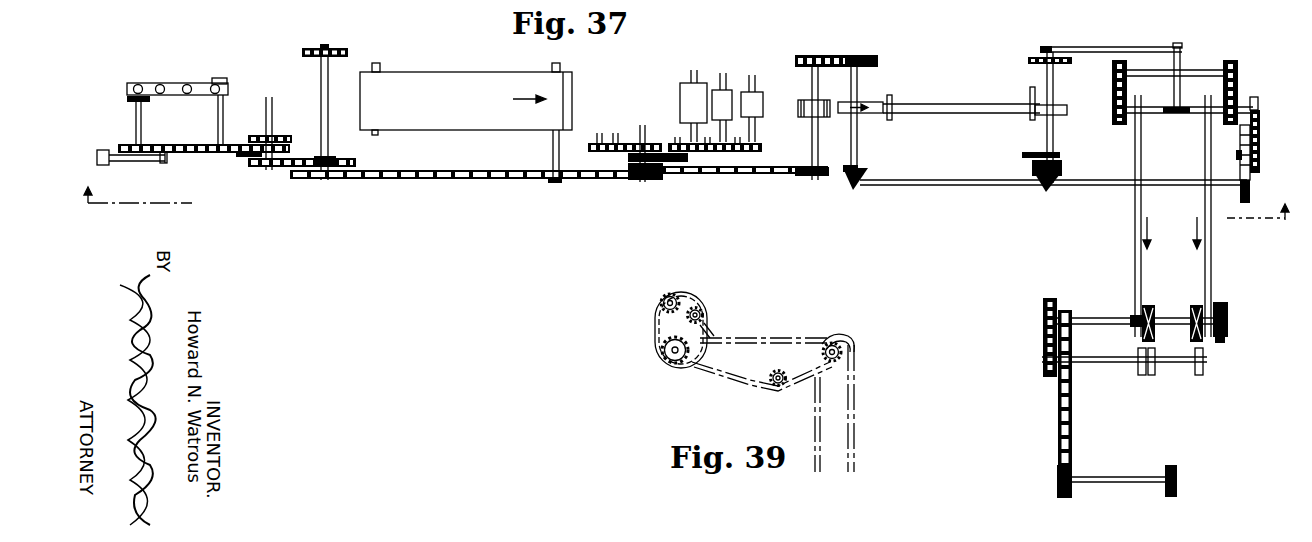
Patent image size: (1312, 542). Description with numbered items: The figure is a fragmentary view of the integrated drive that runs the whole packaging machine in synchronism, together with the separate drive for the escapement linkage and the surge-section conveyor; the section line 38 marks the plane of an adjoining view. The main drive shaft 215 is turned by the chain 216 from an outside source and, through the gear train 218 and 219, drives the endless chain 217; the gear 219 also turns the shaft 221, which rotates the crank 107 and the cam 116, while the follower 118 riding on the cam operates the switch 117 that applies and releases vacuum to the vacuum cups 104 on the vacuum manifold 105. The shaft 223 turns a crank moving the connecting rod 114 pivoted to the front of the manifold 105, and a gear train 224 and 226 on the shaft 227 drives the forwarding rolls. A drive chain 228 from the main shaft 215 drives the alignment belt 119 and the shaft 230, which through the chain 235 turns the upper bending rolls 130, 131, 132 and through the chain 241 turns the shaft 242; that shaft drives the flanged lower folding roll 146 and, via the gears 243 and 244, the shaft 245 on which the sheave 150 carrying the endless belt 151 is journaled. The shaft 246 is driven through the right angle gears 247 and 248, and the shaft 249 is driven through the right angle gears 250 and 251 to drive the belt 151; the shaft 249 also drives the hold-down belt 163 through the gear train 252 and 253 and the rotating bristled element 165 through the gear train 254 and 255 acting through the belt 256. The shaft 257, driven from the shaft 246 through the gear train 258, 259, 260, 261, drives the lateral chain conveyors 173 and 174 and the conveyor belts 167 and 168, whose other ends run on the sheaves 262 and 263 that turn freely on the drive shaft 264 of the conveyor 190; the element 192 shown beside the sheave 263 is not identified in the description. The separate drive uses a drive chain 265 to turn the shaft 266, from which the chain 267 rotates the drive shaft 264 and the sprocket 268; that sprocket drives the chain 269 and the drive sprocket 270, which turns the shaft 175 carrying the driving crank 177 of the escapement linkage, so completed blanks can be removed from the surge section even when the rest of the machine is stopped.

In FIG. 37, the section line 38 is at (690, 192).
In FIG. 37, the vacuum cups 104 is at (136, 85).
In FIG. 37, the vacuum manifold 105 is at (172, 83).
In FIG. 37, the crank 107 is at (149, 100).
In FIG. 37, the connecting rod 114 is at (220, 78).
In FIG. 37, the cam 116 is at (166, 158).
In FIG. 37, the switch 117 is at (101, 150).
In FIG. 37, the follower 118 is at (111, 163).
In FIG. 37, the endless belt 119 is at (457, 80).
In FIG. 37, the first upper roll 130 is at (682, 84).
In FIG. 37, the upper roll 131 is at (714, 90).
In FIG. 37, the upper roll 132 is at (745, 92).
In FIG. 37, the flanged lower roll 146 is at (800, 110).
In FIG. 37, the sheave 150 is at (866, 99).
In FIG. 37, the endless belt 151 is at (893, 102).
In FIG. 37, the elongated endless belt 163 is at (955, 105).
In FIG. 37, the rotating bristled element 165 is at (1171, 106).
In FIG. 37, the conveyor belt 167 is at (1212, 235).
In FIG. 37, the conveyor belt 168 is at (1135, 232).
In FIG. 37, the lateral chain conveyor 173 is at (1240, 85).
In FIG. 37, the lateral chain conveyor 174 is at (1112, 90).
In FIG. 37, the drive shaft 175 is at (1118, 357).
In FIG. 39, the drive shaft 175 is at (700, 308).
In FIG. 37, the driving crank 177 is at (1138, 365).
In FIG. 37, the conveyor 190 is at (1148, 305).
In FIG. 37, the bearing 192 is at (1224, 340).
In FIG. 37, the main drive shaft 215 is at (320, 72).
In FIG. 37, the chain 216 is at (346, 50).
In FIG. 37, the endless chain 217 is at (216, 155).
In FIG. 37, the gear 218 is at (333, 160).
In FIG. 37, the gear 219 is at (284, 168).
In FIG. 37, the shaft 221 is at (142, 128).
In FIG. 37, the shaft 223 is at (224, 128).
In FIG. 37, the gear 224 is at (248, 158).
In FIG. 37, the gear 226 is at (273, 134).
In FIG. 37, the shaft 227 is at (268, 96).
In FIG. 37, the drive chain 228 is at (410, 181).
In FIG. 37, the shaft 230 is at (639, 150).
In FIG. 37, the chain 235 is at (628, 158).
In FIG. 37, the chain 241 is at (712, 176).
In FIG. 37, the shaft 242 is at (812, 153).
In FIG. 37, the gear 243 is at (800, 55).
In FIG. 37, the gear 244 is at (865, 57).
In FIG. 37, the shaft 245 is at (858, 150).
In FIG. 37, the shaft 246 is at (948, 186).
In FIG. 37, the right angle gear 247 is at (847, 175).
In FIG. 37, the right angle gear 248 is at (866, 190).
In FIG. 37, the shaft 249 is at (1054, 145).
In FIG. 37, the right angle gear 250 is at (1050, 186).
In FIG. 37, the right angle gear 251 is at (1062, 175).
In FIG. 37, the gear 252 is at (1062, 165).
In FIG. 37, the gear 253 is at (1022, 155).
In FIG. 37, the gear 254 is at (1046, 62).
In FIG. 37, the gear 255 is at (1042, 50).
In FIG. 37, the belt 256 is at (1100, 48).
In FIG. 37, the shaft 257 is at (1246, 107).
In FIG. 37, the gear 258 is at (1240, 194).
In FIG. 37, the gear 259 is at (1238, 157).
In FIG. 37, the gear 260 is at (1258, 155).
In FIG. 37, the gear 261 is at (1260, 112).
In FIG. 37, the sheave 262 is at (1132, 318).
In FIG. 37, the sheave 263 is at (1222, 302).
In FIG. 37, the drive shaft 264 is at (1085, 318).
In FIG. 39, the drive shaft 264 is at (668, 355).
In FIG. 39, the drive chain 265 is at (856, 395).
In FIG. 37, the shaft 266 is at (1095, 478).
In FIG. 39, the shaft 266 is at (848, 338).
In FIG. 39, the chain 267 is at (785, 338).
In FIG. 39, the sprocket 268 is at (660, 348).
In FIG. 37, the chain 269 is at (1043, 336).
In FIG. 39, the chain 269 is at (690, 284).
In FIG. 39, the drive sprocket 270 is at (707, 322).